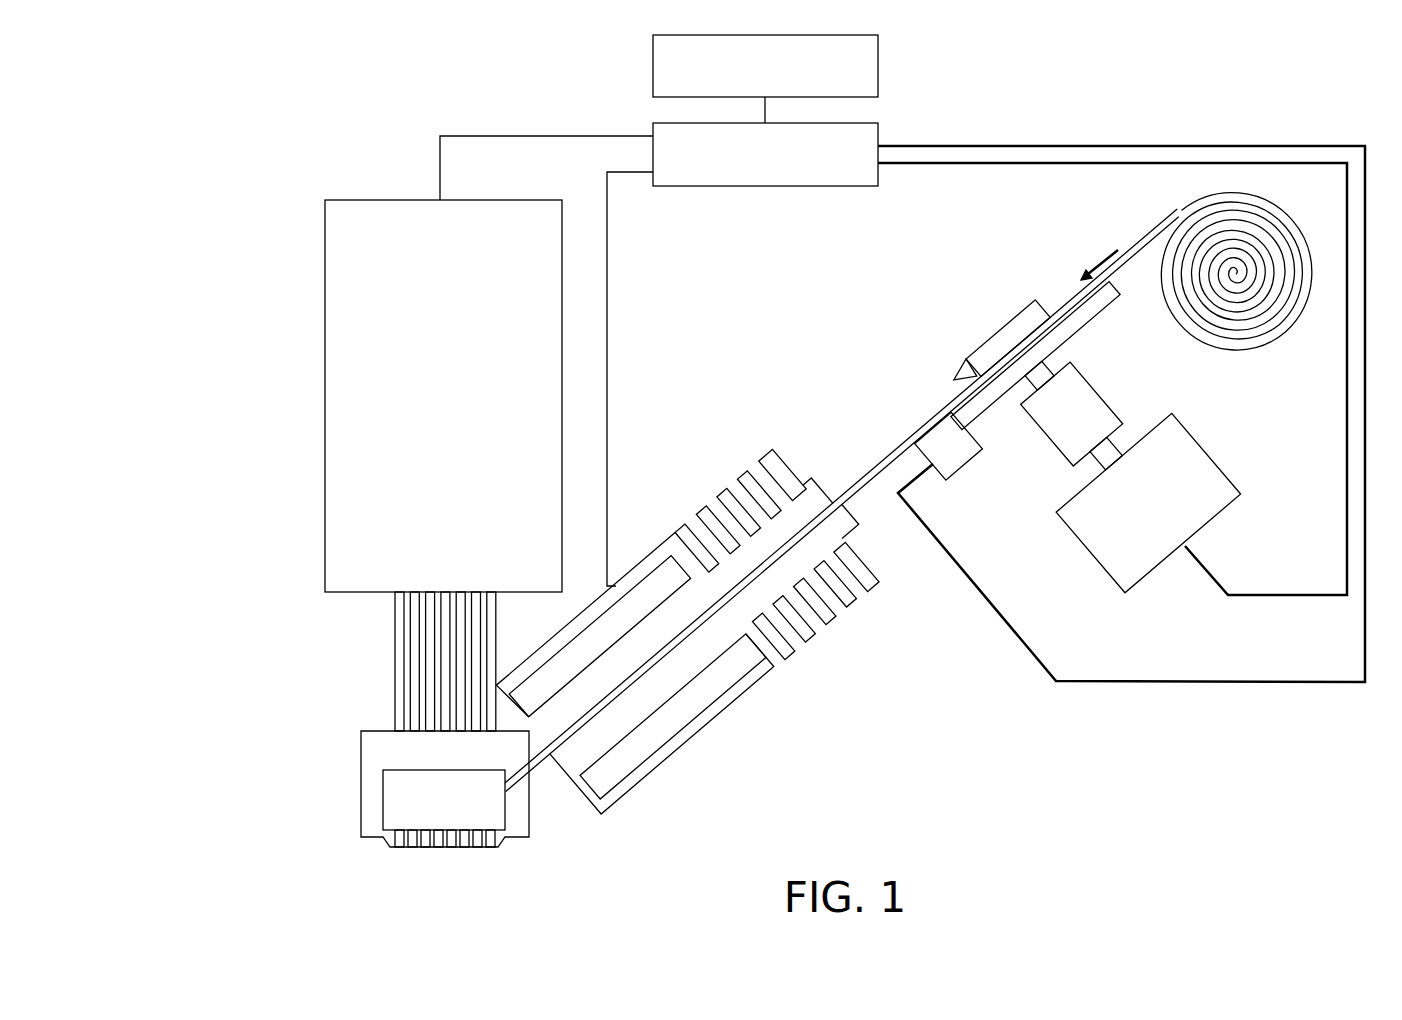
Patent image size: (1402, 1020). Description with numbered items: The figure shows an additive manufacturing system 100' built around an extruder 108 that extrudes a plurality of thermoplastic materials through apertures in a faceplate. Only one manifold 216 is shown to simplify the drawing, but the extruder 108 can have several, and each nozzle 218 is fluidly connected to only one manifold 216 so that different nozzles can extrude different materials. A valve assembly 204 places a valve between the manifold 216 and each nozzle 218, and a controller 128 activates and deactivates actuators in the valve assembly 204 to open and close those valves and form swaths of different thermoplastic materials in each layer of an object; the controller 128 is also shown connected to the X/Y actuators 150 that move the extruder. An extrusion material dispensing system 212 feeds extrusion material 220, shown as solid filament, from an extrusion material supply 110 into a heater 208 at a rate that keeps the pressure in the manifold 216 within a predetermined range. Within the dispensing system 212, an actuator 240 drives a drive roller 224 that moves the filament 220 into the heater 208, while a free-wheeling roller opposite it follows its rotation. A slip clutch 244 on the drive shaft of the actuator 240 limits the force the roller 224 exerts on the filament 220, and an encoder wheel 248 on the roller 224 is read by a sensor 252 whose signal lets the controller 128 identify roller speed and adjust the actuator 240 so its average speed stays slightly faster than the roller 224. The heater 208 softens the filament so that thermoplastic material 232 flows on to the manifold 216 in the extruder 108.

The additive manufacturing system 100' is at (214, 108).
The X/Y actuators 150 is at (879, 66).
The controller 128 is at (765, 187).
The valve assembly 204 is at (395, 198).
The extruder 108 is at (459, 744).
The manifold 216 is at (507, 815).
The nozzle 218 is at (407, 847).
The extrusion material dispensing system 212 is at (1061, 585).
The extrusion material supply 110 is at (1309, 235).
The slip clutch 244 is at (1113, 406).
The actuator 240 is at (1210, 444).
The sensor 252 is at (951, 481).
The encoder wheel 248 is at (993, 414).
The drive roller 224 is at (1003, 328).
The extrusion material 220 is at (1136, 243).
The tape segment 232 is at (587, 722).
The heater 208 is at (694, 627).